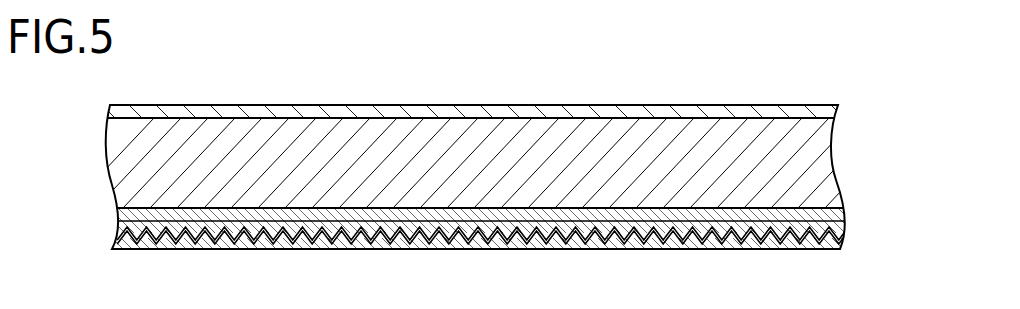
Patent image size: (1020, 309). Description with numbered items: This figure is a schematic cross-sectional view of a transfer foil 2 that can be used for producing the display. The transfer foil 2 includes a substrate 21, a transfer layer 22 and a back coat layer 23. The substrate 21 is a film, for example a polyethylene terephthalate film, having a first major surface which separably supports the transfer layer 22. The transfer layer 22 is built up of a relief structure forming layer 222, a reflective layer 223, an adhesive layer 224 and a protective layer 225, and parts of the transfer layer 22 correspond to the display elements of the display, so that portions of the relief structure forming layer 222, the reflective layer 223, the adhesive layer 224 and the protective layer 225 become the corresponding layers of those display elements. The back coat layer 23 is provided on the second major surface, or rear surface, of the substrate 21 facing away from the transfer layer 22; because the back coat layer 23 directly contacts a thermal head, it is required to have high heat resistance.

The transfer foil 2 is at (855, 103).
The substrate 21 is at (426, 176).
The back coat layer 23 is at (608, 112).
The protective layer 225 is at (825, 213).
The transfer layer 22 is at (506, 261).
The relief structure forming layer 222 is at (480, 261).
The reflective layer 223 is at (670, 233).
The adhesive layer 224 is at (480, 270).